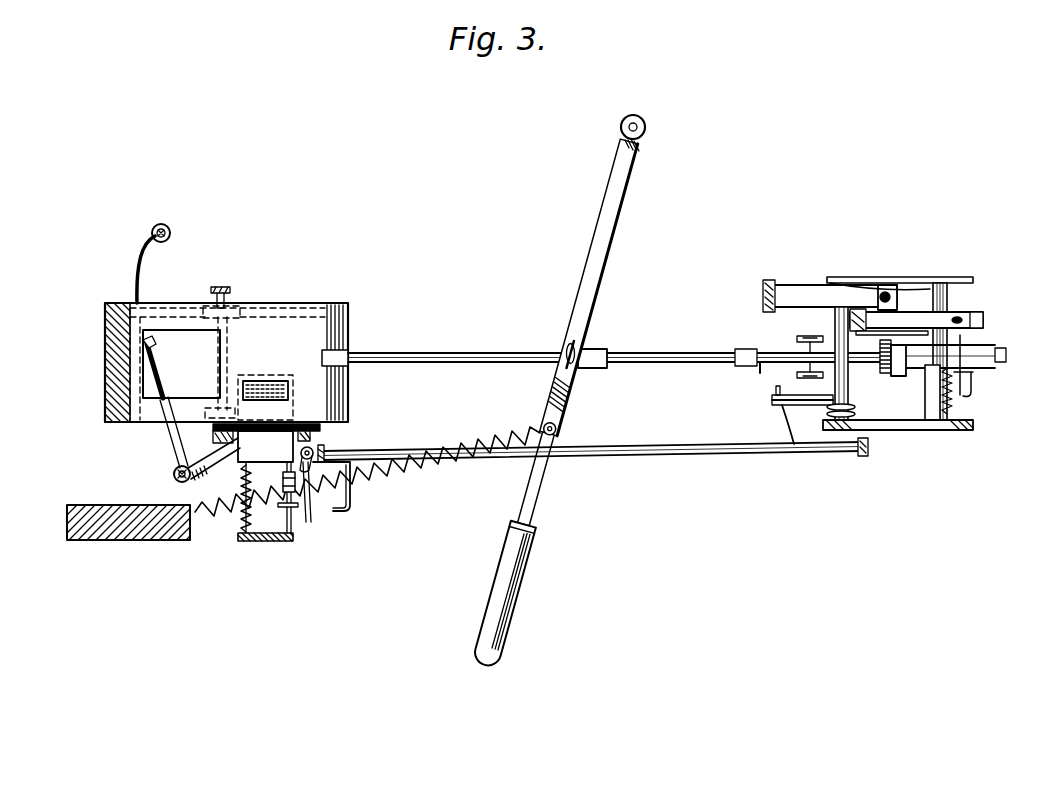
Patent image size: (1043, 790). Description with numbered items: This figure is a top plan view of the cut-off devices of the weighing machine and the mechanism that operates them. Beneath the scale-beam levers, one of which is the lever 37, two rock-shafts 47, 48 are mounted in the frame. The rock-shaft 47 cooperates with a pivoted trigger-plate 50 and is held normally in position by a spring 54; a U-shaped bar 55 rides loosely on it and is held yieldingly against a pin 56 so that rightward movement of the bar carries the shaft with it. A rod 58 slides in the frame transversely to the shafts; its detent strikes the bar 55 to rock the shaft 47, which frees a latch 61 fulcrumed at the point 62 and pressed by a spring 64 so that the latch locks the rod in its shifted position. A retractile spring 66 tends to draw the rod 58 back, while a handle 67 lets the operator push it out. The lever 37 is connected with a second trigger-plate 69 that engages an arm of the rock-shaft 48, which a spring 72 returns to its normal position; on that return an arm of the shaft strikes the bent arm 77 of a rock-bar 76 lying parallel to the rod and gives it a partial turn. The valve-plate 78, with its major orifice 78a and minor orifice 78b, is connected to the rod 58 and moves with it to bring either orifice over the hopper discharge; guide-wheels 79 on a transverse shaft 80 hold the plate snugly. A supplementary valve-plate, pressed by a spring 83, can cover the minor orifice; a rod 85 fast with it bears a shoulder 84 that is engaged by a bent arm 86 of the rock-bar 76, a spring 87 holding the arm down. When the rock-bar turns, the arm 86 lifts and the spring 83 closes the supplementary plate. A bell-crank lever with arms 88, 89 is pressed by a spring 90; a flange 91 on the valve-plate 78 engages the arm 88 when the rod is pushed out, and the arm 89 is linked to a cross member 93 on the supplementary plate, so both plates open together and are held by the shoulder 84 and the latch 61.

The lever 37 is at (888, 292).
The rock-shaft 47 is at (957, 410).
The rock-shaft 48 is at (849, 389).
The trigger-plate 50 is at (933, 320).
The spring 54 is at (934, 283).
The U-shaped bar 55 is at (928, 382).
The pin 56 is at (957, 389).
The rod 58 is at (456, 356).
The latch 61 is at (990, 352).
The fulcrum point 62 is at (963, 318).
The spring 64 is at (970, 393).
The retractile spring 66 is at (490, 429).
The handle 67 is at (592, 320).
The trigger-plate 69 is at (794, 296).
The spring 72 is at (856, 416).
The rock-bar 76 is at (700, 453).
The bent arm 77 is at (776, 412).
The valve-plate 78 is at (772, 400).
The major orifice 78a is at (181, 364).
The minor orifice 78b is at (270, 386).
The guide-wheels 79 is at (231, 310).
The transverse shaft 80 is at (213, 298).
The spring 83 is at (240, 481).
The shoulder 84 is at (283, 480).
The rod 85 is at (312, 449).
The bent arm 86 is at (328, 515).
The spring 87 is at (282, 448).
The bell-crank arm 88 is at (172, 459).
The bell-crank arm 89 is at (200, 471).
The spring 90 is at (143, 286).
The flange 91 is at (105, 401).
The cross member 93 is at (346, 407).